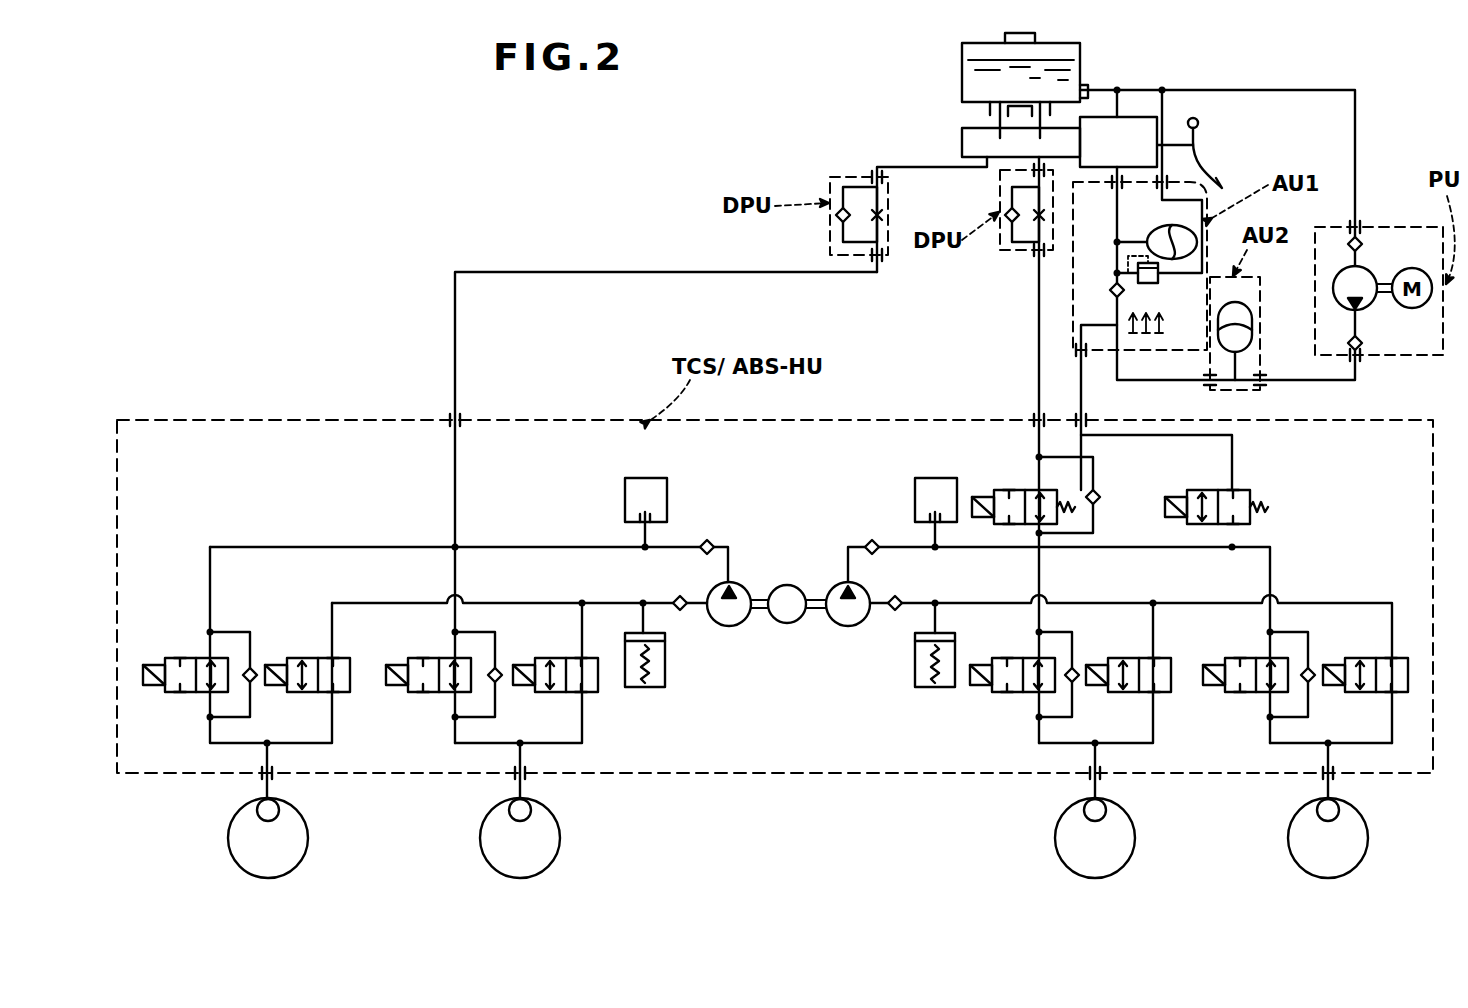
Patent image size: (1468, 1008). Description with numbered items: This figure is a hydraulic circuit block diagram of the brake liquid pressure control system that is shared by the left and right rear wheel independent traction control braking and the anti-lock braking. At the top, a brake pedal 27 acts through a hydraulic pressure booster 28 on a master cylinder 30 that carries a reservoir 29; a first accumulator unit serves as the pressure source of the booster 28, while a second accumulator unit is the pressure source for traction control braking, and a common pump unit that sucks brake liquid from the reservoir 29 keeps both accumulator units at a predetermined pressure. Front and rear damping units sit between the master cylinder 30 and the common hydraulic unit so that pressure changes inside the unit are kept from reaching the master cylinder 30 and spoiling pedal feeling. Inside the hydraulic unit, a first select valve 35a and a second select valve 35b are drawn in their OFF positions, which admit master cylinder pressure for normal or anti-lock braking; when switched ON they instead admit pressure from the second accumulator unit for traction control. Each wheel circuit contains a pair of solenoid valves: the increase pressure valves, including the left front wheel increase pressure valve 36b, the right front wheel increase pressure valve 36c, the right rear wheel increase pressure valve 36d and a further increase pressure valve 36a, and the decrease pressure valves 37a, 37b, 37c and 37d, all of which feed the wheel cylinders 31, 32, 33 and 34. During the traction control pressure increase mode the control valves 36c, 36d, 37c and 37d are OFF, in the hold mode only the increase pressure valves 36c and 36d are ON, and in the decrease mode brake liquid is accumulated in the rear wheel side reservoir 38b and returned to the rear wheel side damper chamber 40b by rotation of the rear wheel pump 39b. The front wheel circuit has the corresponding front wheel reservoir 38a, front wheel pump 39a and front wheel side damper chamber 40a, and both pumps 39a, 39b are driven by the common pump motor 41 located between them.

The brake pedal 27 is at (1222, 166).
The hydraulic pressure booster 28 is at (1131, 125).
The reservoir 29 is at (962, 78).
The master cylinder 30 is at (962, 136).
The wheel cylinder 31 is at (531, 806).
The wheel cylinder 32 is at (279, 806).
The wheel cylinder 33 is at (1339, 806).
The wheel cylinder 34 is at (1106, 806).
The first select valve 35a is at (1012, 490).
The second select valve 35b is at (1206, 490).
The inlet solenoid valve 36a is at (430, 693).
The left front wheel increase pressure valve 36b is at (184, 693).
The right front wheel increase pressure valve 36c is at (1012, 693).
The right rear wheel increase pressure valve 36d is at (1245, 693).
The left rear wheel decrease pressure valve 37a is at (592, 693).
The right front wheel decrease pressure valve 37b is at (328, 693).
The left rear wheel decrease pressure valve 37c is at (1140, 693).
The control valve 37d is at (1370, 693).
The front wheel reservoir 38a is at (662, 686).
The rear wheel side reservoir 38b is at (916, 684).
The front wheel pump 39a is at (717, 624).
The rear wheel pump 39b is at (843, 625).
The front wheel side damper chamber 40a is at (667, 496).
The rear wheel side damper chamber 40b is at (915, 496).
The pump motor 41 is at (785, 584).